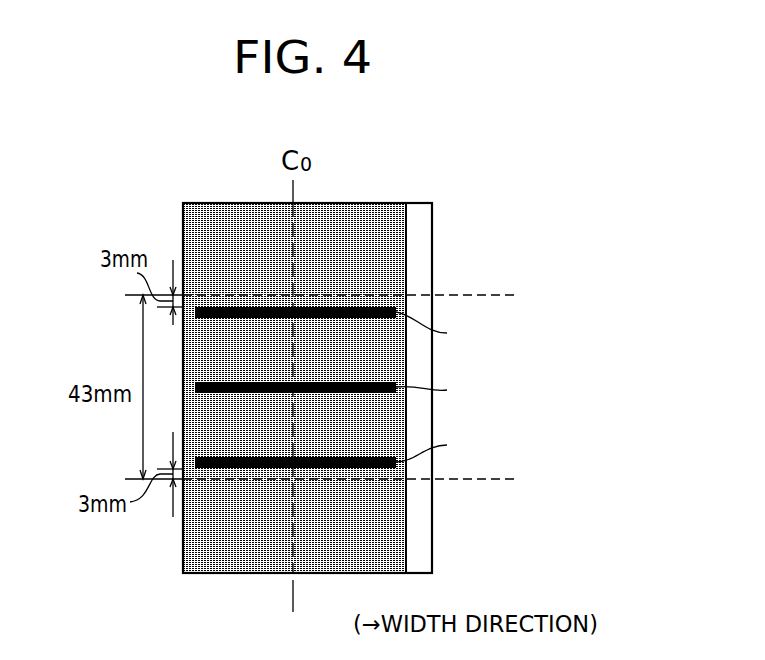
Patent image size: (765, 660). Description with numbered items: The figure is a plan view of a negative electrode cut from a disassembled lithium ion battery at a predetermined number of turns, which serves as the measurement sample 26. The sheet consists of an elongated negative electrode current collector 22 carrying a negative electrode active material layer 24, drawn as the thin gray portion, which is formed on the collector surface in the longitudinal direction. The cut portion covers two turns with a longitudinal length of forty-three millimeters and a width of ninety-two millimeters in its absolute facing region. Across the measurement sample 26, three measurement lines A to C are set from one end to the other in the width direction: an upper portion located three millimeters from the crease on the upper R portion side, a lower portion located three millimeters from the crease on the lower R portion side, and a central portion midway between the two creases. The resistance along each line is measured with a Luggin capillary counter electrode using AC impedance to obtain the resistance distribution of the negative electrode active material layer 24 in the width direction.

The negative electrode current collector 22 is at (418, 225).
The negative electrode active material layer 24 is at (400, 253).
The measurement sample 26 is at (571, 300).